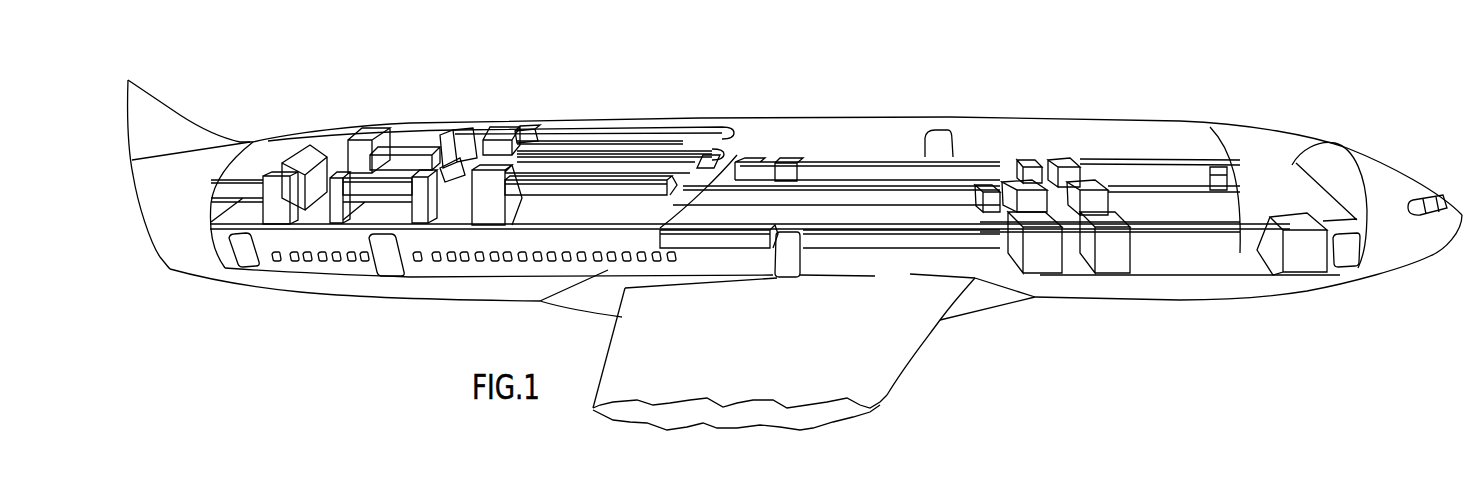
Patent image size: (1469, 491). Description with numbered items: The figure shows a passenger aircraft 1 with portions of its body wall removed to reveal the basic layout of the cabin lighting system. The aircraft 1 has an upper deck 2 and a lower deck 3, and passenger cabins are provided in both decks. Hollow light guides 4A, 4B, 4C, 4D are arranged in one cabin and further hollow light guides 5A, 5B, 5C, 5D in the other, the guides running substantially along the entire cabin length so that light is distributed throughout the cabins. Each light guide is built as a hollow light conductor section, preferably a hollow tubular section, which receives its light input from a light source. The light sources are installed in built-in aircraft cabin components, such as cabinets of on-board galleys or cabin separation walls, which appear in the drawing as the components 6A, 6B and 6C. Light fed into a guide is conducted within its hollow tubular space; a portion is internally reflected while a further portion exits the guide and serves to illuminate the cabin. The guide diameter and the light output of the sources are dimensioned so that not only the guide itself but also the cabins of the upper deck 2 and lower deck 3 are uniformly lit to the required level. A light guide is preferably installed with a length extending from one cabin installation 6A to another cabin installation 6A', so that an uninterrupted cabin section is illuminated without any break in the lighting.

The aircraft 1 is at (1210, 81).
The upper deck 2 is at (553, 213).
The lower deck 3 is at (1173, 267).
The hollow light guide 4A is at (647, 190).
The hollow light guide 4B is at (693, 156).
The hollow light guide 4C is at (641, 149).
The hollow light guide 4D is at (597, 128).
The hollow light guide 5A is at (983, 243).
The hollow light guide 5B is at (961, 233).
The hollow light guide 5C is at (905, 186).
The hollow light guide 5D is at (873, 160).
The built-in aircraft cabin component 6A is at (784, 255).
The cabin installation 6A' is at (1167, 279).
The built-in aircraft cabin component 6B is at (502, 146).
The built-in aircraft cabin component 6C is at (522, 129).